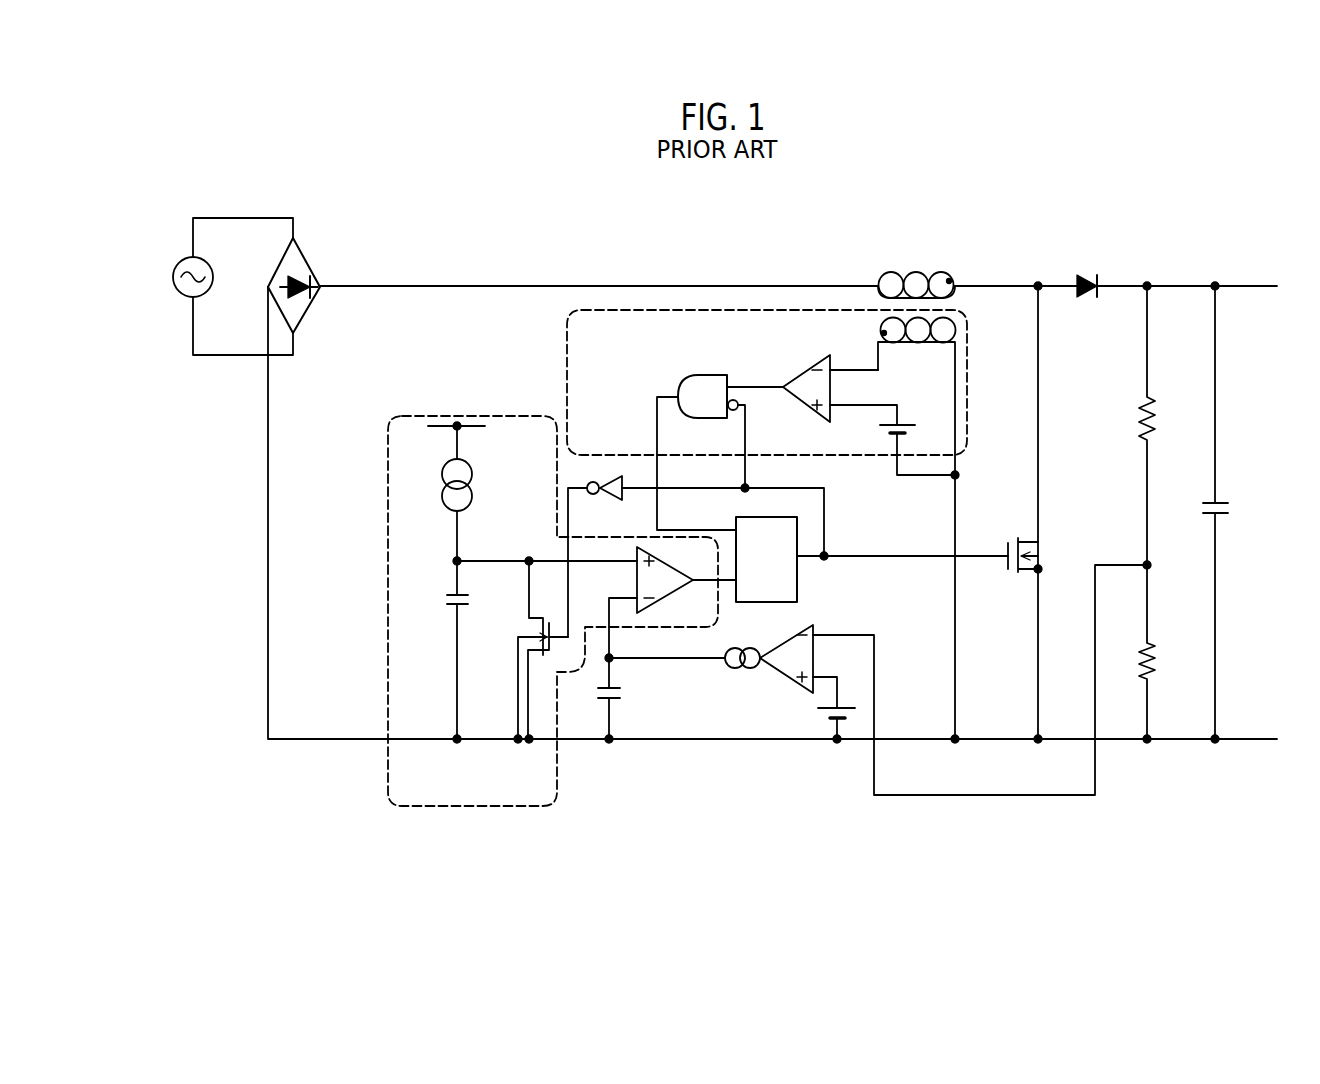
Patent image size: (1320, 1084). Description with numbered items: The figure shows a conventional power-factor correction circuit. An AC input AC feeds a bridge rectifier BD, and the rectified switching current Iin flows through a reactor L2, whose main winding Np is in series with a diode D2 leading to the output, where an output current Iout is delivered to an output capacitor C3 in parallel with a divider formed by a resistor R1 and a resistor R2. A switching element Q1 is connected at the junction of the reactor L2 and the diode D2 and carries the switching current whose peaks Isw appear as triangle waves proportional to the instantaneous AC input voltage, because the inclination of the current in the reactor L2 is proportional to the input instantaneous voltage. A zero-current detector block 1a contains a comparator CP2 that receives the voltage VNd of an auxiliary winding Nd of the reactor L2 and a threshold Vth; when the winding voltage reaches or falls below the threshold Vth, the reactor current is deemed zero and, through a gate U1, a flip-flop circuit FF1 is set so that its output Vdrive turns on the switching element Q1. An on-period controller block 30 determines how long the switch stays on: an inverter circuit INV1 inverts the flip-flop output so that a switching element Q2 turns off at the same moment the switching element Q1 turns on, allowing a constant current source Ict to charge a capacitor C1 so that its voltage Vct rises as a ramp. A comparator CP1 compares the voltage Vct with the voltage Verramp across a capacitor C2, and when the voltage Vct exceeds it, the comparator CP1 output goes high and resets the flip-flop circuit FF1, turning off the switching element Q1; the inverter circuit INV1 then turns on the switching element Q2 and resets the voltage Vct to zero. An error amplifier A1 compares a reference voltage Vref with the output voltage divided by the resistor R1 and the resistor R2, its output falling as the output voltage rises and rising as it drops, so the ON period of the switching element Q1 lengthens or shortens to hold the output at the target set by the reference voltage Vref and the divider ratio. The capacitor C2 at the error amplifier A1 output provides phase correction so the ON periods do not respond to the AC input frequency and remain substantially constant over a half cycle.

The AC input AC is at (216, 286).
The switching current Iin is at (262, 203).
The bridge diode rectifier BD is at (322, 262).
The reactor L2 is at (918, 478).
The primary winding Np is at (916, 270).
The auxiliary winding Nd is at (918, 531).
The diode D2 is at (1088, 271).
The output current Iout is at (1169, 275).
The switching element Q1 is at (1036, 514).
The peaks of switching current Isw is at (1055, 496).
The resistor R1 is at (1161, 425).
The resistor R2 is at (1161, 652).
The output capacitor C3 is at (1231, 514).
The zero-current detector 1a is at (566, 334).
The comparator CP2 is at (831, 387).
The detection winding voltage VNd is at (856, 357).
The threshold Vth is at (917, 450).
The AND gate U1 is at (720, 441).
The flip-flop circuit FF1 is at (850, 545).
The drive voltage Vdrive is at (872, 544).
The inverter circuit INV1 is at (694, 548).
The on-period controller 30 is at (481, 808).
The constant current source Ict is at (487, 462).
The voltage of capacitor C1 Vct is at (545, 550).
The capacitor C1 is at (442, 652).
The switching element Q2 is at (533, 652).
The comparator CP1 is at (656, 602).
The capacitor C2 is at (595, 698).
The error ramp voltage Verramp is at (667, 647).
The error amplifier A1 is at (781, 664).
The reference voltage Vref is at (816, 723).